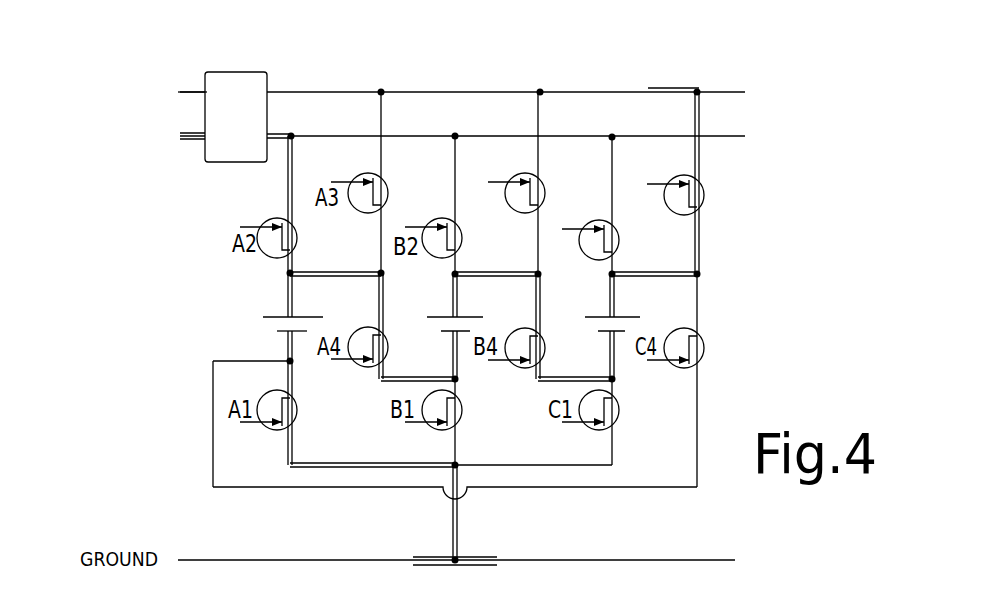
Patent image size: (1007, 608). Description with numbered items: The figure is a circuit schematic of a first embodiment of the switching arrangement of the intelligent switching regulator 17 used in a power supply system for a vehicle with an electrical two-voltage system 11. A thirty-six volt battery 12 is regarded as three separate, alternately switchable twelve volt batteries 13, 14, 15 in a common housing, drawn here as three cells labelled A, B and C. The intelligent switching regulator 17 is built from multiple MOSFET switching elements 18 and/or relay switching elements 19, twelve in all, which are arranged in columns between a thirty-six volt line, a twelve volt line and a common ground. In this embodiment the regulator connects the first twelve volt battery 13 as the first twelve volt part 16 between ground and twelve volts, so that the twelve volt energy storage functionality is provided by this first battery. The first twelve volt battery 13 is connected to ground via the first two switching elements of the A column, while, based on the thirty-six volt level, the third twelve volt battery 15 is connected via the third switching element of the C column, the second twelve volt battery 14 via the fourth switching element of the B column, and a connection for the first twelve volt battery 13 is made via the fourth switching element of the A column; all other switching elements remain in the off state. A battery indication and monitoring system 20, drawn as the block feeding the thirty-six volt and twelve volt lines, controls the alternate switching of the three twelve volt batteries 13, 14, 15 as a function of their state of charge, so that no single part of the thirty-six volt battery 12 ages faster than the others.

The electrical 14/42 V two-voltage system 11 is at (125, 135).
The 36 V battery 12 is at (188, 91).
The first 12 V battery 13 is at (265, 306).
The second 12 V battery 14 is at (421, 309).
The third 12 V battery 15 is at (581, 309).
The first 12 V part 16 is at (265, 332).
The intelligent switching regulator 17 is at (437, 85).
The MOSFET switching elements 18 is at (668, 172).
The relay switching elements 19 is at (593, 212).
The battery indication and monitoring system 20 is at (247, 80).